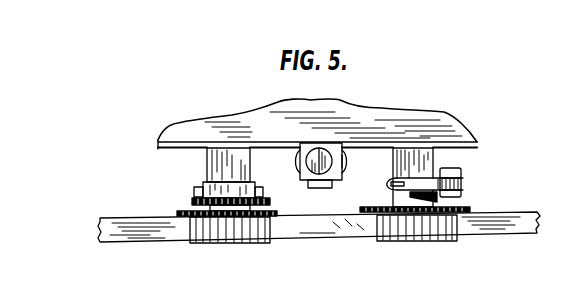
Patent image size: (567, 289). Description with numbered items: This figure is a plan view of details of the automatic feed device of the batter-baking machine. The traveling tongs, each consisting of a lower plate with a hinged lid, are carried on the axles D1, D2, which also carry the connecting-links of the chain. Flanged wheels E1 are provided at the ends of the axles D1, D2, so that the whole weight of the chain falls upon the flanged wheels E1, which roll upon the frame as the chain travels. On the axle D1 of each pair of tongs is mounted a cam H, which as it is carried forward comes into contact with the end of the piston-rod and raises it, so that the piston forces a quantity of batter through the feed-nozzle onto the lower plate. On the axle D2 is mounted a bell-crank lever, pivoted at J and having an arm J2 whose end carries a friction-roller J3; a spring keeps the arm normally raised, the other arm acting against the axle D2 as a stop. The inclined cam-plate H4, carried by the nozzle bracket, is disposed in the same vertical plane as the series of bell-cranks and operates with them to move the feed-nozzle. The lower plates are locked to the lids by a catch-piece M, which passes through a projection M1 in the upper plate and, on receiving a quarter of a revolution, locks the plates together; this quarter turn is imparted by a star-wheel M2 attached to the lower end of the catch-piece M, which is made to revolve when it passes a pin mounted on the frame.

The catch-piece M is at (316, 152).
The projection M1 is at (343, 163).
The star-wheel M2 is at (322, 188).
The axle D1 is at (207, 166).
The axle D2 is at (434, 160).
The cam H is at (192, 202).
The inclined cam-plate H4 is at (201, 281).
The pivot of bell-crank lever J is at (319, 237).
The bell-crank arm J2 is at (463, 184).
The friction-roller J3 is at (388, 182).
The flanged wheels E1 is at (238, 227).